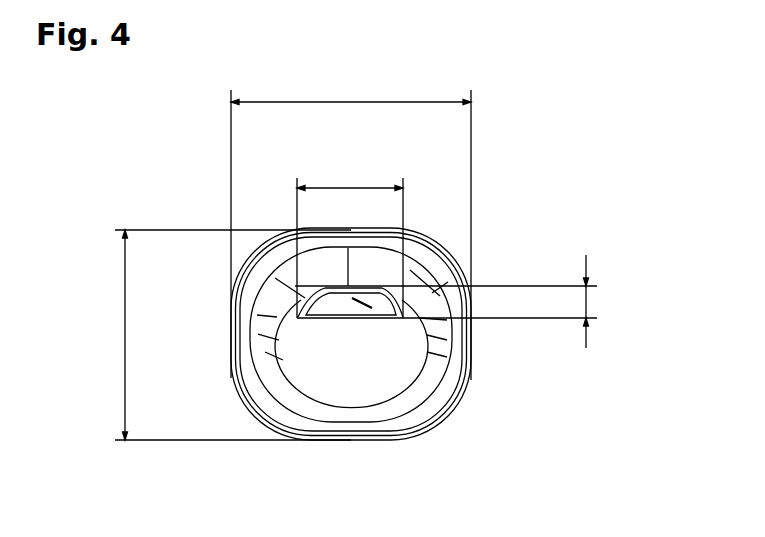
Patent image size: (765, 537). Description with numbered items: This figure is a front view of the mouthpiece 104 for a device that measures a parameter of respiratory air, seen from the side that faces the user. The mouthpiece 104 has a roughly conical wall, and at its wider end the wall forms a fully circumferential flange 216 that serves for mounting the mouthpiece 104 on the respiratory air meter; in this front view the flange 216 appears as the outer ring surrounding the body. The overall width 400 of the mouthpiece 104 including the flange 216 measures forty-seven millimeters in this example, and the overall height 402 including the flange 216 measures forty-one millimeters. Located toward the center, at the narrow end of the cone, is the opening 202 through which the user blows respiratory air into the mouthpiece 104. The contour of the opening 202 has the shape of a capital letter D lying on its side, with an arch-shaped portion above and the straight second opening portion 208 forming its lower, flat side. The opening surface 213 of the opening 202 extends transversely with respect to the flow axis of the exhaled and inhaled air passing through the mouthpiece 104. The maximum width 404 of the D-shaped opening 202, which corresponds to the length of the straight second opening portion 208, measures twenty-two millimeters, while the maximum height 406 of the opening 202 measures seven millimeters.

The mouthpiece 104 is at (173, 180).
The opening 202 is at (330, 315).
The second opening portion 208 is at (353, 322).
The opening surface 213 is at (364, 300).
The flange 216 is at (470, 380).
The overall width 400 is at (348, 100).
The overall height 402 is at (125, 347).
The maximum width 404 is at (348, 186).
The maximum height 406 is at (586, 300).